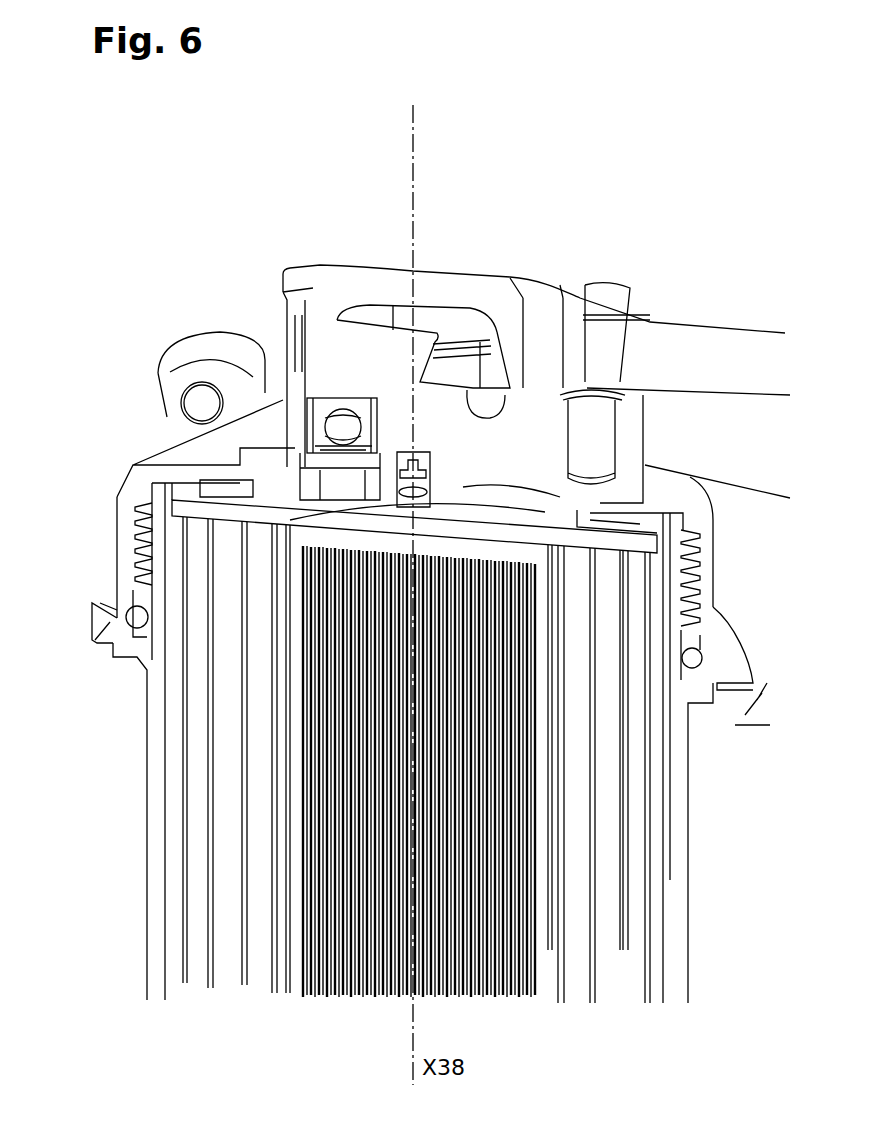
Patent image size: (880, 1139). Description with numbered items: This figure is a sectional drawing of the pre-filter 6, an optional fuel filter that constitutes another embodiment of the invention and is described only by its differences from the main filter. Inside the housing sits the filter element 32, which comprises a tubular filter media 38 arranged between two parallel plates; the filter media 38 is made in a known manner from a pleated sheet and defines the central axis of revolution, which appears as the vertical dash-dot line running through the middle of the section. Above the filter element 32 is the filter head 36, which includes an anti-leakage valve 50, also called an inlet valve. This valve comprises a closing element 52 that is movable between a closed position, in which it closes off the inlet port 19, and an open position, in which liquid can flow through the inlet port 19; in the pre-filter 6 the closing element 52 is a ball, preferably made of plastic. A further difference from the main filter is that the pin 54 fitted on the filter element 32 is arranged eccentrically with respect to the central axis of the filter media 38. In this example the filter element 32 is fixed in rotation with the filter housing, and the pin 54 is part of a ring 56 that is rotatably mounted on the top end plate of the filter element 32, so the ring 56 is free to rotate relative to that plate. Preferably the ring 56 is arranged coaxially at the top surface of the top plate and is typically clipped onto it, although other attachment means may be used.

The pre-filter 6 is at (121, 683).
The inlet port 19 is at (349, 440).
The filter element 32 is at (264, 946).
The filter head 36 is at (120, 573).
The filter media 38 is at (600, 797).
The anti-leakage valve 50 is at (328, 413).
The closing element 52 is at (276, 350).
The pin 54 is at (327, 493).
The ring 56 is at (490, 517).